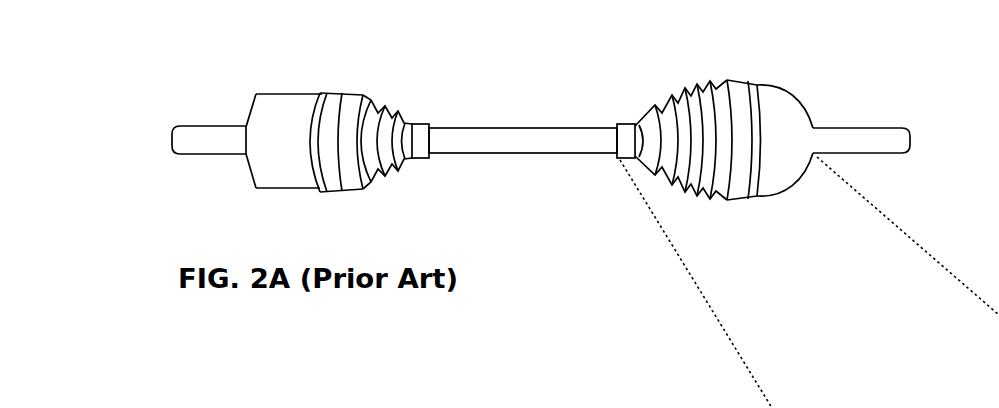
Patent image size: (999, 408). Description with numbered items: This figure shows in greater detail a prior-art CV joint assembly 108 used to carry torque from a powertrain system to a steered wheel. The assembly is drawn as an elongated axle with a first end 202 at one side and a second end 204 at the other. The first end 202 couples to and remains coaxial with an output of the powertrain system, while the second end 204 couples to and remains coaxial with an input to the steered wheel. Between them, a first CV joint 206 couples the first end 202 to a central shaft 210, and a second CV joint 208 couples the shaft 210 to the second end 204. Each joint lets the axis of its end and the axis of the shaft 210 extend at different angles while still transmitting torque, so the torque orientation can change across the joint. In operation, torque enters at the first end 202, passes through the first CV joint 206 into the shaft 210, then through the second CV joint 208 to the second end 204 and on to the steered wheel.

The CV joint assembly 108 is at (264, 64).
The first end 202 is at (182, 125).
The second end 204 is at (893, 127).
The first CV joint 206 is at (372, 172).
The second CV joint 208 is at (707, 82).
The shaft 210 is at (585, 125).